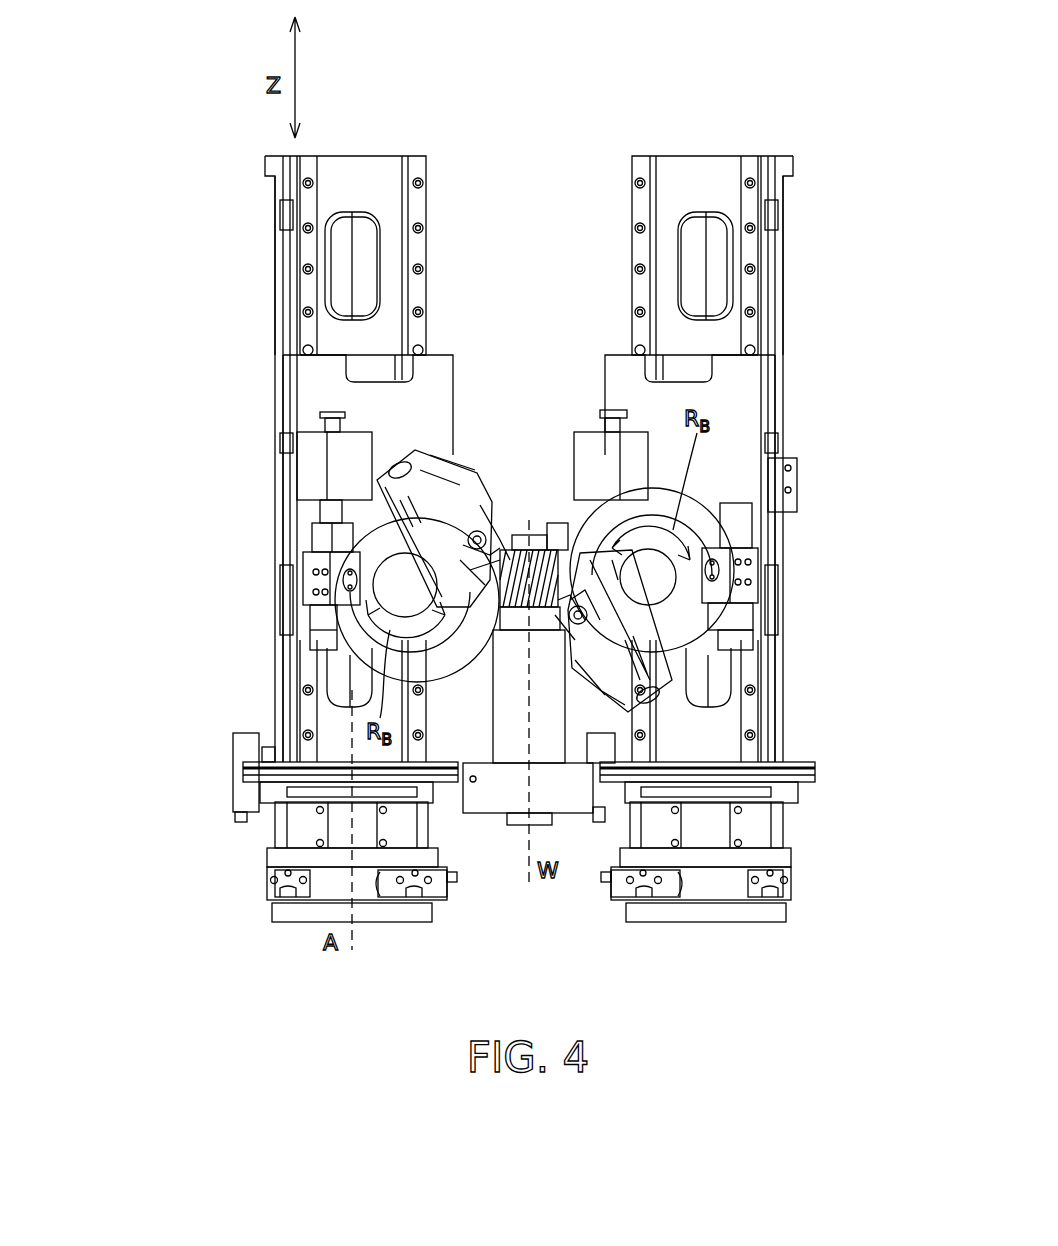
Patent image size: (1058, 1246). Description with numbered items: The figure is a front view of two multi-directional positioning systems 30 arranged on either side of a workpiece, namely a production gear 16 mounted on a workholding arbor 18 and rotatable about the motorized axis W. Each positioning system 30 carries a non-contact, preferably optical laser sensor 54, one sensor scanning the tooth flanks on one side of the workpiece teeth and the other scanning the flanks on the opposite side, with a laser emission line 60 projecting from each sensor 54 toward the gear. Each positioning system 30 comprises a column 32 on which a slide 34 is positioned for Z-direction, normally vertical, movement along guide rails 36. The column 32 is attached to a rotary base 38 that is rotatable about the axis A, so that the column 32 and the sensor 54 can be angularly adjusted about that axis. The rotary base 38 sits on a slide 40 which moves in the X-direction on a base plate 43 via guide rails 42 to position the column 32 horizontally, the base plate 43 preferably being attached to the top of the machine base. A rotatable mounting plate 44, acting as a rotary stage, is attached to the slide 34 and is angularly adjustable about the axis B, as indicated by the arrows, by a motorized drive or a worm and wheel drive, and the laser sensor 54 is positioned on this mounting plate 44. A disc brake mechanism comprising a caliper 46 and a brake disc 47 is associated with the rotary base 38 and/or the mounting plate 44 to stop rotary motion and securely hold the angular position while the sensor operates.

The production gear 16 is at (493, 683).
The workholding arbor 18 is at (512, 720).
The positioning system 30 is at (446, 133).
The column 32 is at (370, 157).
The slide 34 is at (437, 372).
The guide rails 36 is at (280, 325).
The rotary base 38 is at (300, 823).
The slide 40 is at (275, 862).
The guide rails 42 is at (280, 888).
The base plate 43 is at (285, 912).
The rotatable mounting plate 44 is at (360, 493).
The caliper 46 is at (313, 572).
The brake disc 47 is at (360, 627).
The laser sensor 54 is at (470, 487).
The laser emission line 60 is at (500, 548).